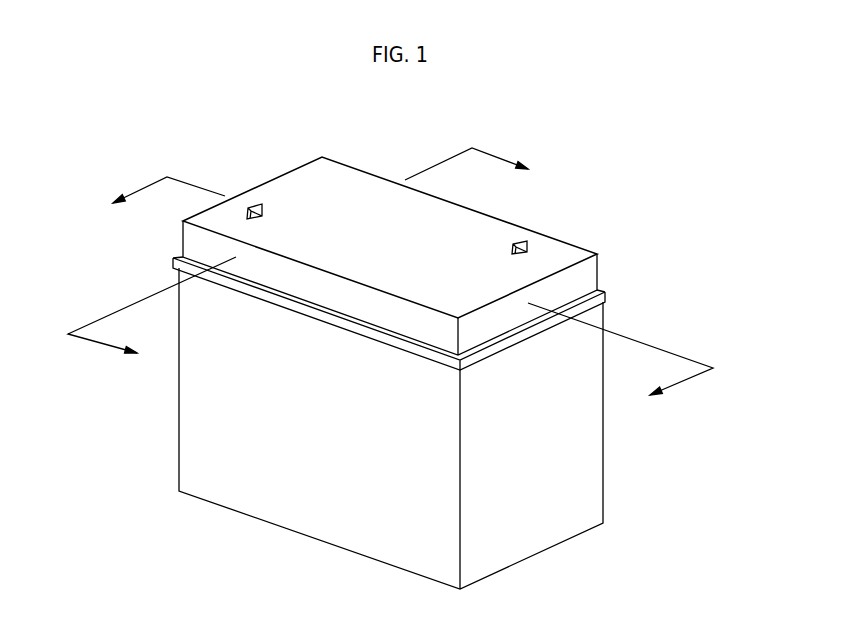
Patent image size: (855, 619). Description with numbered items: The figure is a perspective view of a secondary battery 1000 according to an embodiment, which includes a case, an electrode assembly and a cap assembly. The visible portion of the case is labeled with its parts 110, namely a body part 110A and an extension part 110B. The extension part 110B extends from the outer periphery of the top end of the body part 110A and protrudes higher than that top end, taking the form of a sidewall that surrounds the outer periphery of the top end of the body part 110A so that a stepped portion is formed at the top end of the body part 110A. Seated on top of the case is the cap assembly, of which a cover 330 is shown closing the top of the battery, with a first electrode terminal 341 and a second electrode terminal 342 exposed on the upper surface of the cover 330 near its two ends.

The secondary battery 1000 is at (97, 113).
The cover 330 is at (348, 178).
The first electrode terminal 341 is at (257, 204).
The second electrode terminal 342 is at (527, 245).
The case 110 is at (710, 272).
The body part 110A is at (595, 318).
The extension part 110B is at (604, 293).